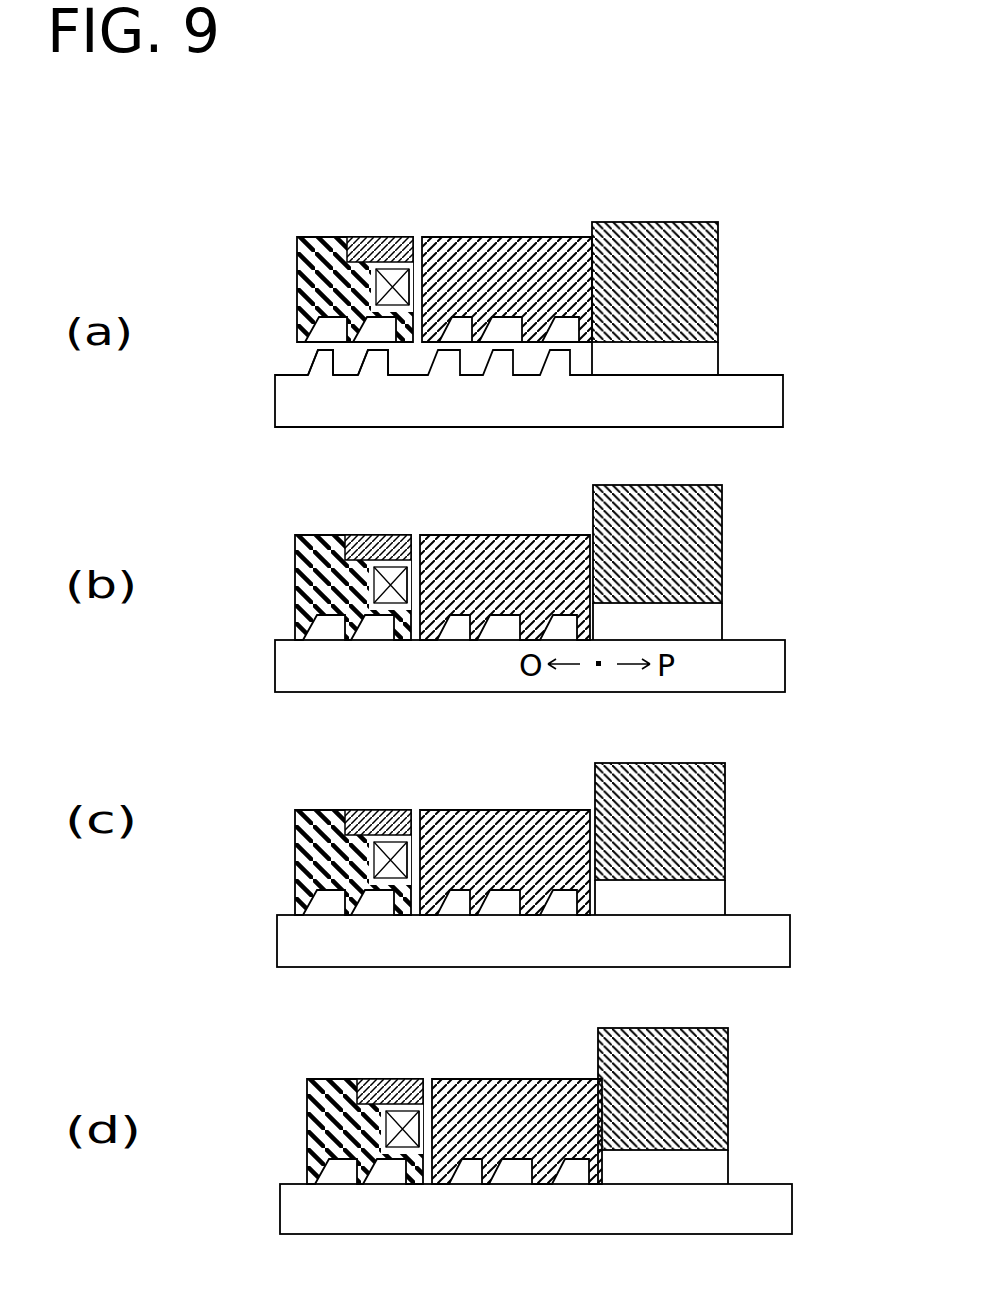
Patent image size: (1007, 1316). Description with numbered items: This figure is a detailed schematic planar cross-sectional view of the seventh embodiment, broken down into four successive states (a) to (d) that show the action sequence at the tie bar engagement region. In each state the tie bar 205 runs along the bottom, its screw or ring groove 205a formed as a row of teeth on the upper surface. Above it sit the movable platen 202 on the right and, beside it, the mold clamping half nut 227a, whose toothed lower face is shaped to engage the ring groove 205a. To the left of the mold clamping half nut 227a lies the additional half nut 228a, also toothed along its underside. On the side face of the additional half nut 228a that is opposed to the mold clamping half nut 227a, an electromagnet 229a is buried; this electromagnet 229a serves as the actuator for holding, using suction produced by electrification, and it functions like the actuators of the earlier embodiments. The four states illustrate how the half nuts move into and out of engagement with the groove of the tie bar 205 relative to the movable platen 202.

The movable platen 202 is at (660, 270).
The tie bar 205 is at (717, 402).
The ring groove 205a is at (375, 368).
The mold clamping half nut 227a is at (505, 290).
The additional half nut 228a is at (372, 263).
The electromagnet 229a is at (388, 258).